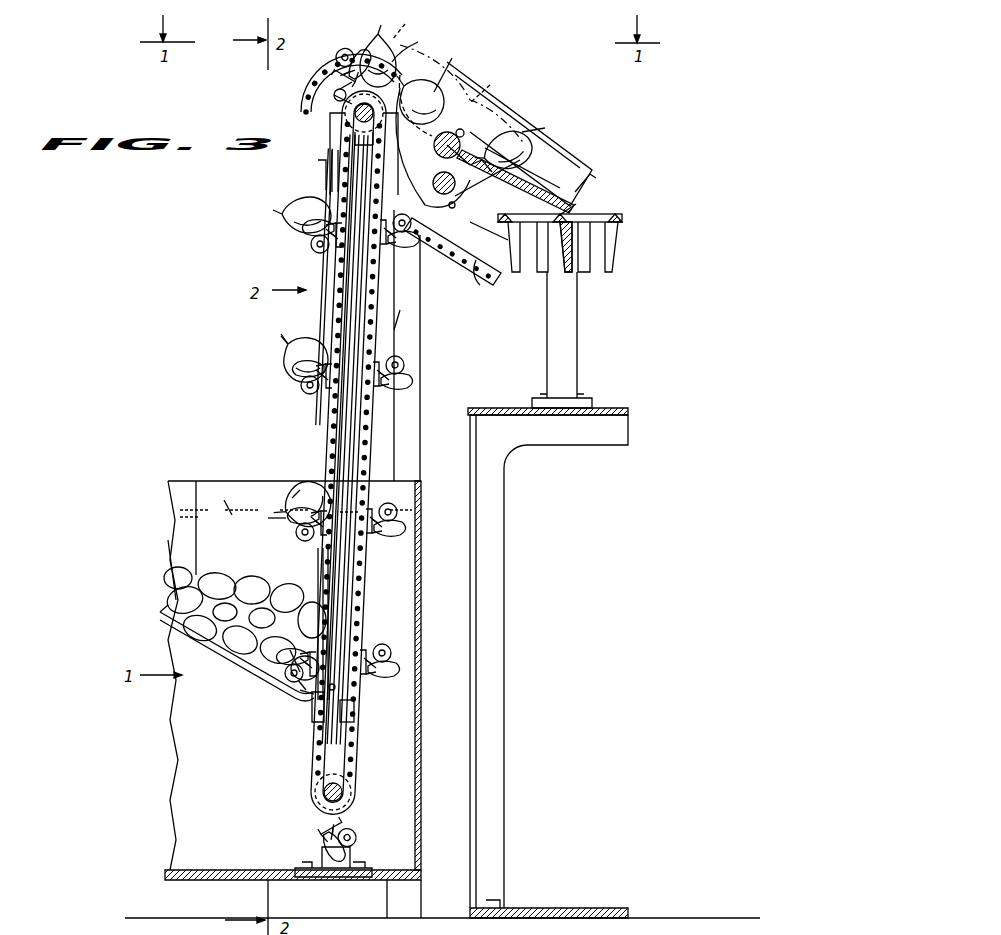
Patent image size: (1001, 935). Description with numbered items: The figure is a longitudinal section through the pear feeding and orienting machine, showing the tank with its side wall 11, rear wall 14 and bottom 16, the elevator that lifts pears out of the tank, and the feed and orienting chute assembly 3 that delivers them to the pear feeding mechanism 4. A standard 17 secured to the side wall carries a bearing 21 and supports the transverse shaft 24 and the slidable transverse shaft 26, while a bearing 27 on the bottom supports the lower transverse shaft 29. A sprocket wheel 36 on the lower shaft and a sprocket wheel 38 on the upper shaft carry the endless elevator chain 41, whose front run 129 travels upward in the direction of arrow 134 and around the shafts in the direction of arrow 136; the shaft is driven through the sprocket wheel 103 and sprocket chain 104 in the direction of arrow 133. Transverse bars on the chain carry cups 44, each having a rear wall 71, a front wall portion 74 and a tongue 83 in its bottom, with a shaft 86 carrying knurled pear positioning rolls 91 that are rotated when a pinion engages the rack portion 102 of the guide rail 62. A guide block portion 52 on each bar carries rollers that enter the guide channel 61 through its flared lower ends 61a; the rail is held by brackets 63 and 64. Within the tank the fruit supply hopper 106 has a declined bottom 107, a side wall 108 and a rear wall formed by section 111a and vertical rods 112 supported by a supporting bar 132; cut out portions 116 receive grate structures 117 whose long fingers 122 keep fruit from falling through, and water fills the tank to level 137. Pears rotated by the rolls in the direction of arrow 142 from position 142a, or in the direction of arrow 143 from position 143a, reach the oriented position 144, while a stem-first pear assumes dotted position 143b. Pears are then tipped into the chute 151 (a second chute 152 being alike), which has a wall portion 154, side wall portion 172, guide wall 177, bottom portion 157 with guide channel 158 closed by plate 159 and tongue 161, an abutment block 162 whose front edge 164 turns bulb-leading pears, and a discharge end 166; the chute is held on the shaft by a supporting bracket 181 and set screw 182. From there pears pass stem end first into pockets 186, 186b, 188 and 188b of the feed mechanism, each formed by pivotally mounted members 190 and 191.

The feed and orienting chute assembly 3 is at (530, 118).
The pear feeding mechanism 4 is at (626, 228).
The side wall 11 is at (238, 756).
The rear wall 14 is at (420, 782).
The bottom 16 is at (242, 880).
The standard 17 is at (420, 356).
The bearing 21 is at (486, 225).
The transverse shaft 24 is at (373, 118).
The transverse shaft 26 is at (438, 190).
The bearing 27 is at (352, 858).
The transverse shaft 29 is at (346, 795).
The sprocket wheel 36 is at (352, 785).
The sprocket wheel 38 is at (352, 128).
The endless elevator chain 41 is at (400, 412).
The pear receiving and orienting cup 44 is at (372, 58).
The guide block portion 52 is at (340, 93).
The guide channel 61 is at (332, 422).
The flared lower ends 61a is at (338, 690).
The guide rail 62 is at (330, 408).
The bracket 63 is at (354, 708).
The bracket 64 is at (332, 170).
The rear wall 71 is at (345, 80).
The front wall portion 74 is at (360, 80).
The tongue 83 is at (432, 241).
The shaft 86 is at (408, 222).
The pear positioning roll 91 is at (348, 68).
The rack portion 102 is at (320, 185).
The sprocket wheel 103 is at (334, 98).
The sprocket chain 104 is at (480, 278).
The fruit supply hopper 106 is at (200, 634).
The bottom 107 is at (228, 640).
The side wall 108 is at (182, 522).
The rear wall section 111a is at (240, 568).
The vertical rods 112 is at (318, 568).
The semi-circular cut out portion 116 is at (282, 652).
The semi-circular grate structure 117 is at (292, 664).
The long finger 122 is at (300, 692).
The front run 129 is at (334, 441).
The supporting bar 132 is at (318, 720).
The arrow 133 is at (300, 113).
The arrow 134 is at (326, 302).
The arrow 136 is at (400, 320).
The water level 137 is at (228, 498).
The arrow 142 is at (300, 345).
The pear position 142a is at (286, 346).
The arrow 143 is at (300, 492).
The pear position 143a is at (296, 503).
The pear position 143b is at (266, 518).
The oriented pear position 144 is at (292, 208).
The chute 151 is at (586, 164).
The chute 152 is at (470, 192).
The wall portion 154 is at (558, 148).
The bottom portion 157 is at (548, 188).
The guide channel 158 is at (570, 214).
The plate 159 is at (473, 126).
The tongue 161 is at (447, 153).
The abutment block 162 is at (465, 142).
The front edge 164 is at (462, 165).
The discharge end 166 is at (592, 180).
The side wall portion 172 is at (556, 172).
The guide wall 177 is at (430, 78).
The supporting bracket 181 is at (452, 184).
The set screw 182 is at (460, 210).
The pocket 186 is at (614, 222).
The pocket 186b is at (618, 245).
The pocket 188 is at (524, 256).
The pocket 188b is at (545, 264).
The pivotally mounted member 190 is at (604, 262).
The pivotally mounted member 191 is at (586, 254).